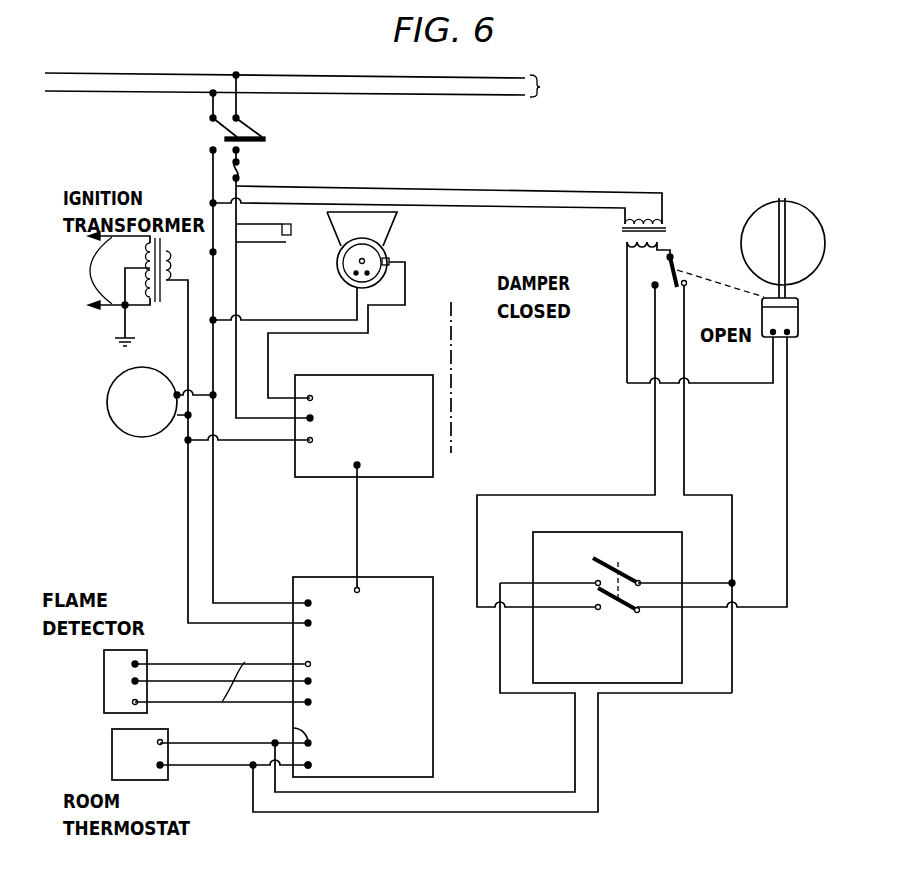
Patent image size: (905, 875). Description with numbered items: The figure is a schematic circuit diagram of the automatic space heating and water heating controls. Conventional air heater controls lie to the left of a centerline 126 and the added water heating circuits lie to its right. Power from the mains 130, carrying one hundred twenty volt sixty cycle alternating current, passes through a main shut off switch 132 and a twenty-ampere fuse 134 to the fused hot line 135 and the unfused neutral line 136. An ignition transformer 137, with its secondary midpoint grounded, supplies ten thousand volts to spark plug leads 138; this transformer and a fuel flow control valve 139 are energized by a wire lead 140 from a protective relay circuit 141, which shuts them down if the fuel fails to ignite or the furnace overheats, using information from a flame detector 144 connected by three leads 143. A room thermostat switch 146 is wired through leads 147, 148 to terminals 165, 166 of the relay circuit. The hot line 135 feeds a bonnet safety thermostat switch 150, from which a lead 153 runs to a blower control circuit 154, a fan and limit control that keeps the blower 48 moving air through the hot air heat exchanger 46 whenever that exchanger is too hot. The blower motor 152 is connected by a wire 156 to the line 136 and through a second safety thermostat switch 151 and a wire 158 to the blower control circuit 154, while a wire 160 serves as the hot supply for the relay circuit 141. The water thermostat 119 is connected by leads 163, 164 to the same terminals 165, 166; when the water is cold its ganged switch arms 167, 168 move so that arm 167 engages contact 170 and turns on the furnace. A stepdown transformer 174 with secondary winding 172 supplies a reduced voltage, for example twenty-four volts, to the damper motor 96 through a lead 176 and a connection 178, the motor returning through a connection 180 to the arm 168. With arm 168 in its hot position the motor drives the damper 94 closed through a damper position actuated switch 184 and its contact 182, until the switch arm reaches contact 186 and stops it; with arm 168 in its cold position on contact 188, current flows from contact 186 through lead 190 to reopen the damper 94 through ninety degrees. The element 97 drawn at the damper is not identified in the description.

The hot air heat exchanger 46 is at (388, 220).
The blower 48 is at (343, 283).
The damper 94 is at (800, 230).
The damper motor 96 is at (800, 330).
The damper shaft 97 is at (774, 210).
The water thermostat 119 is at (606, 514).
The centerline 126 is at (453, 377).
The power mains 130 is at (311, 85).
The main shut off switch 132 is at (247, 136).
The fuse 134 is at (241, 167).
The fused line 135 is at (243, 186).
The unfused line 136 is at (213, 170).
The ignition transformer 137 is at (142, 310).
The spark plug leads 138 is at (93, 271).
The fuel flow control valve 139 is at (110, 385).
The wire lead 140 is at (188, 348).
The protective relay circuit 141 is at (316, 553).
The leads 143 is at (240, 671).
The flame detector 144 is at (103, 686).
The room thermostat switch 146 is at (112, 762).
The lead 147 is at (190, 742).
The lead 148 is at (205, 766).
The safety thermostat switch 150 is at (291, 230).
The safety thermostat switch 151 is at (389, 257).
The blower motor 152 is at (348, 264).
The lead 153 is at (236, 285).
The blower control circuit 154 is at (361, 376).
The wire 156 is at (342, 321).
The wire 158 is at (326, 335).
The wire 160 is at (358, 526).
The lead 163 is at (507, 791).
The lead 164 is at (520, 814).
The terminal 165 is at (293, 727).
The terminal 166 is at (312, 766).
The switch arm 167 is at (616, 567).
The switch arm 168 is at (630, 611).
The water thermostat switch contact 170 is at (596, 580).
The secondary winding 172 is at (642, 242).
The stepdown transformer 174 is at (623, 225).
The lead 176 is at (627, 331).
The connection 178 is at (727, 386).
The connection 180 is at (787, 498).
The contact 182 is at (688, 286).
The damper position actuated switch 184 is at (677, 262).
The contact 186 is at (652, 283).
The contact 188 is at (596, 604).
The lead 190 is at (655, 440).